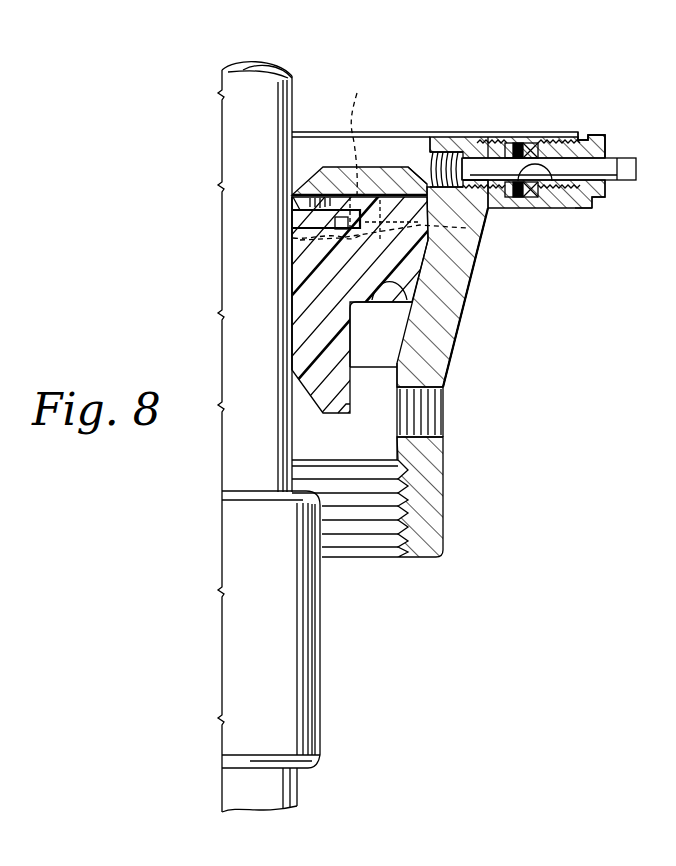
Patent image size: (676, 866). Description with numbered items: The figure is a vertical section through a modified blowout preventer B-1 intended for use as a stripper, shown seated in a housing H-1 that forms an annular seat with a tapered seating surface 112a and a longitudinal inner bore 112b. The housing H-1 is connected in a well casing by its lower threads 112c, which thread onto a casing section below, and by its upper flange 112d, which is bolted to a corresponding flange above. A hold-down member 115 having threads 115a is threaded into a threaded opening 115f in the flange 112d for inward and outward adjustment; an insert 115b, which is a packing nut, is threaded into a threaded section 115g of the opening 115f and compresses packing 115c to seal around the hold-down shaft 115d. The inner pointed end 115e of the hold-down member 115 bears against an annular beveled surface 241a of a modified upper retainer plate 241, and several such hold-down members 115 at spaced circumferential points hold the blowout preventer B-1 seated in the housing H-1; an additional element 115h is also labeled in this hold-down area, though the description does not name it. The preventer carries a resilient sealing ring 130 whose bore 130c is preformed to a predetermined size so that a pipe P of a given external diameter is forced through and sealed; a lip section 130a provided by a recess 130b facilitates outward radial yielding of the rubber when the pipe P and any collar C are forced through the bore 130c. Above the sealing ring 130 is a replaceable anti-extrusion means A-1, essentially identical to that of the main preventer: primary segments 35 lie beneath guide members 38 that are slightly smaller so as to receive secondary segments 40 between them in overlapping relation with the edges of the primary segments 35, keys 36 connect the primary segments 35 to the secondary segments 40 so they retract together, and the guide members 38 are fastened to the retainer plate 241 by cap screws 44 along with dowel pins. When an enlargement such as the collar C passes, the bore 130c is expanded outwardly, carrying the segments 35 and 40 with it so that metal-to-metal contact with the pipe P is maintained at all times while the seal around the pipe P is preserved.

The pipe P is at (296, 77).
The collar C is at (312, 668).
The secondary segments 40 is at (298, 200).
The replaceable anti-extrusion means A-1 is at (292, 215).
The key 36 is at (337, 220).
The primary segments 35 is at (305, 243).
The cap screws 44 is at (357, 135).
The modified upper retainer plate 241 is at (337, 184).
The annular beveled surface 241a is at (425, 163).
The sealing ring 130 is at (293, 296).
The bore 130c is at (293, 278).
The recess 130b is at (383, 302).
The lip section 130a is at (355, 367).
The tapered seating surface 112a is at (455, 262).
The longitudinal inner bore 112b is at (397, 441).
The lower threads 112c is at (382, 533).
The upper flange 112d is at (497, 137).
The guide members 38 is at (467, 229).
The housing H-1 is at (455, 280).
The blowout preventer B-1 is at (447, 356).
The hold-down member 115 is at (610, 166).
The threads 115a is at (440, 150).
The insert 115b is at (597, 135).
The packing 115c is at (518, 143).
The hold-down shaft 115d is at (476, 165).
The inner pointed end 115e is at (422, 162).
The threaded opening 115f is at (488, 133).
The threaded section 115g is at (550, 140).
The washer arc 115h is at (553, 184).